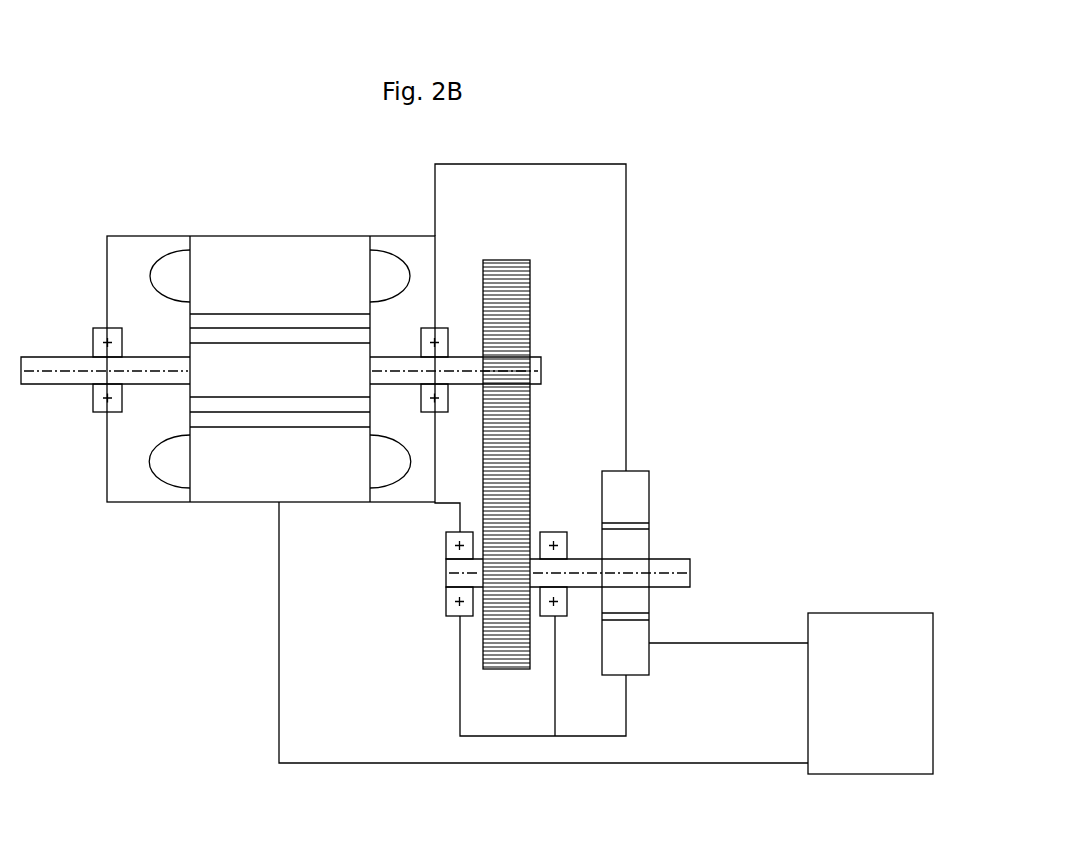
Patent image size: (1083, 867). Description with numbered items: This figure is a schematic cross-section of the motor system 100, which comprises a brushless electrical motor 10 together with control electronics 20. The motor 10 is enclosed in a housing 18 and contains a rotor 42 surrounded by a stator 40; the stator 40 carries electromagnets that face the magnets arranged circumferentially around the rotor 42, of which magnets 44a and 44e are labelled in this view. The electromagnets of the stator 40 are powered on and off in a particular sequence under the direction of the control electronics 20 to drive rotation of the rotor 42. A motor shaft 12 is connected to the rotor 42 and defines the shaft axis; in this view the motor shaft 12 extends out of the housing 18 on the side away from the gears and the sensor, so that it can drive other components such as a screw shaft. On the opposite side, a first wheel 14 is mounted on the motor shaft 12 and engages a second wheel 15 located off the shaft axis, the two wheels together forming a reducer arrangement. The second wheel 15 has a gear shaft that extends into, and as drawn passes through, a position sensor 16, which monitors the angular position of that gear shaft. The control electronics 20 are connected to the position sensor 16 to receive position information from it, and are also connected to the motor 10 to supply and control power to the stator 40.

The motor system 100 is at (740, 349).
The brushless electrical motor 10 is at (176, 196).
The housing 18 is at (107, 277).
The stator 40 is at (243, 247).
The magnet 44e is at (370, 338).
The rotor 42 is at (230, 390).
The magnet 44a is at (327, 405).
The motor shaft 12 is at (52, 377).
The first wheel 14 is at (515, 300).
The second wheel 15 is at (505, 638).
The position sensor 16 is at (640, 490).
The control electronics 20 is at (888, 709).